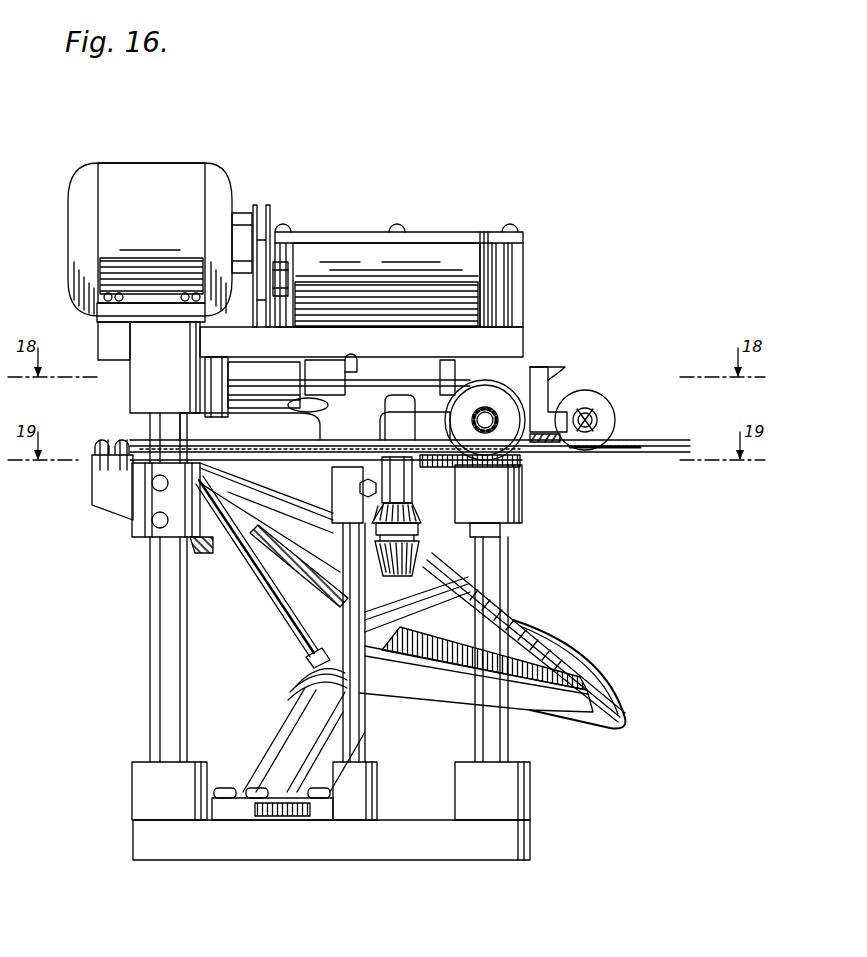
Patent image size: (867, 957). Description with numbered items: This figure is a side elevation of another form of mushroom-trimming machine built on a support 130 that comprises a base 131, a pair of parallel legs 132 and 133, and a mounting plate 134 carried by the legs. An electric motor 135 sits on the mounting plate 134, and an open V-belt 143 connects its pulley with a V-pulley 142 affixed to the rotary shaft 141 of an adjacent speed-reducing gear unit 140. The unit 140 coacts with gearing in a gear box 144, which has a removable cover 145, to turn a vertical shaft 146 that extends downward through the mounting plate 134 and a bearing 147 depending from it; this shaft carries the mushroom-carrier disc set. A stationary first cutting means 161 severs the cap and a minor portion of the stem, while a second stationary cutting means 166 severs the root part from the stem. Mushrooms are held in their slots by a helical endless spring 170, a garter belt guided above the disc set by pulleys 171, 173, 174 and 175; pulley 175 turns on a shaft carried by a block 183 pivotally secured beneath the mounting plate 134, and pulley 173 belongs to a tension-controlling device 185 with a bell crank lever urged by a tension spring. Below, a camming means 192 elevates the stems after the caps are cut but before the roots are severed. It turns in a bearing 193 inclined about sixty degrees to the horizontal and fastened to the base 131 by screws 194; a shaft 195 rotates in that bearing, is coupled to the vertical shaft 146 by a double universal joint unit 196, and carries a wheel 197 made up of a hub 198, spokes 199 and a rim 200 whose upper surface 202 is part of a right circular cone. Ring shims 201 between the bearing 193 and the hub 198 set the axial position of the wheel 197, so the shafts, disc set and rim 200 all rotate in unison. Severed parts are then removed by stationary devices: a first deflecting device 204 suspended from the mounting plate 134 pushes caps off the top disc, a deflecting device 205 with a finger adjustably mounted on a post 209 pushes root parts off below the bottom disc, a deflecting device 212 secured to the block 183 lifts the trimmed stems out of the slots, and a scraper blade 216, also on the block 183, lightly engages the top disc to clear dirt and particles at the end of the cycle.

The support 130 is at (122, 808).
The base 131 is at (190, 848).
The leg 132 is at (505, 742).
The leg 133 is at (160, 729).
The mounting plate 134 is at (100, 339).
The electric motor 135 is at (118, 190).
The speed-reducing gear unit 140 is at (418, 231).
The rotary shaft 141 is at (290, 272).
The V-pulley 142 is at (268, 212).
The open V-belt 143 is at (258, 216).
The gear box 144 is at (512, 271).
The removable cover 145 is at (518, 239).
The vertical shaft 146 is at (460, 491).
The bearing 147 is at (383, 378).
The first cutting means 161 is at (502, 511).
The second cutting means 166 is at (92, 478).
The helical endless spring 170 is at (401, 378).
The pulley 171 is at (588, 394).
The pulley 173 is at (266, 404).
The pulley 174 is at (320, 378).
The pulley 175 is at (497, 454).
The block 183 is at (536, 374).
The tension-controlling device 185 is at (237, 378).
The camming means 192 is at (264, 626).
The bearing 193 is at (277, 739).
The screws 194 is at (250, 790).
The shaft 195 is at (430, 611).
The double universal joint unit 196 is at (416, 546).
The wheel 197 is at (563, 633).
The hub 198 is at (312, 659).
The spokes 199 is at (320, 580).
The rim 200 is at (230, 470).
The ring shims 201 is at (306, 683).
The upper surface 202 is at (503, 611).
The first deflecting device 204 is at (205, 432).
The deflecting device 205 is at (284, 480).
The post 209 is at (361, 739).
The deflecting device 212 is at (412, 476).
The scraper blade 216 is at (580, 453).